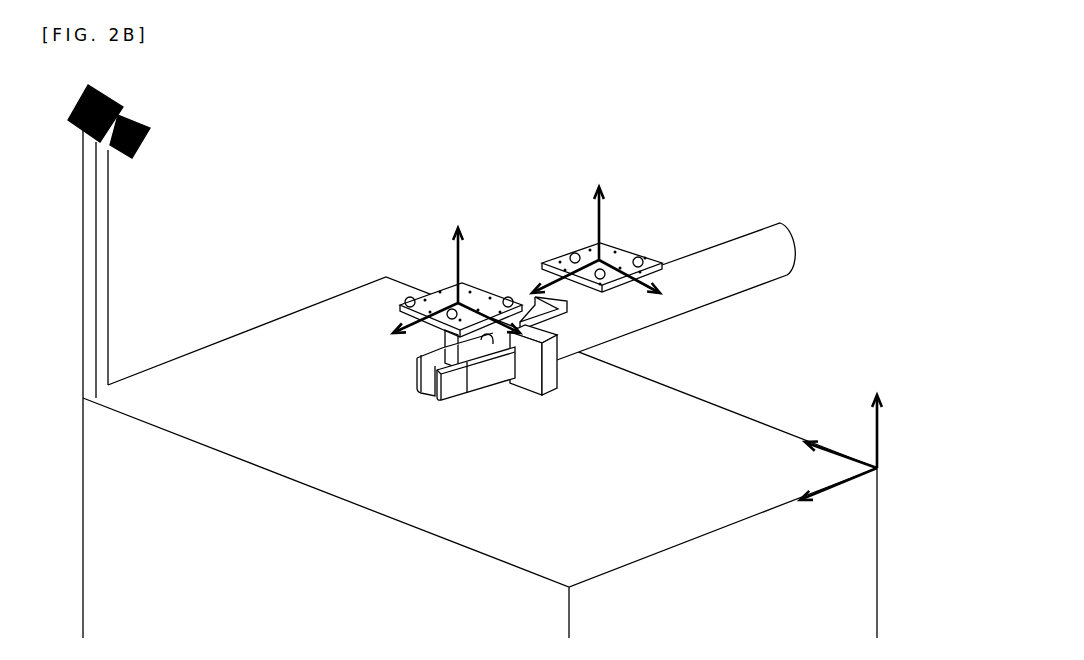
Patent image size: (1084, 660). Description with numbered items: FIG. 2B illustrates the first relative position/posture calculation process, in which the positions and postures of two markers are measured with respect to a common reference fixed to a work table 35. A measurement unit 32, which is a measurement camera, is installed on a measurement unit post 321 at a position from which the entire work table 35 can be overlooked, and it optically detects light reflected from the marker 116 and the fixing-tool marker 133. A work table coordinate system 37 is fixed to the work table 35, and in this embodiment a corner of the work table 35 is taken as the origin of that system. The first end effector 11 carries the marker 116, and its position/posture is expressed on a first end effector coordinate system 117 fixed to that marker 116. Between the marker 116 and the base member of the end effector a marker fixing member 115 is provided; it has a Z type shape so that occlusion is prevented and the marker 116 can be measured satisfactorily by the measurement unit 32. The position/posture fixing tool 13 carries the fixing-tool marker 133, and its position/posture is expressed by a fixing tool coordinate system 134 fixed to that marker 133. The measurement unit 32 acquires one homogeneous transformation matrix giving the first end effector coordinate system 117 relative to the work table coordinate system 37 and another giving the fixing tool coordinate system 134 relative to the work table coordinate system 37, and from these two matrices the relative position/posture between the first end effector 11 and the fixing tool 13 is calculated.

The first end effector 11 is at (755, 228).
The position/posture fixing tool 13 is at (418, 353).
The measurement unit 32 is at (110, 99).
The work table 35 is at (880, 590).
The work table coordinate system 37 is at (880, 402).
The marker fixing member 115 is at (588, 313).
The marker 116 is at (630, 247).
The first end effector coordinate system 117 is at (598, 188).
The fixing-tool marker 133 is at (420, 296).
The fixing tool coordinate system 134 is at (452, 232).
The measurement unit post 321 is at (110, 207).